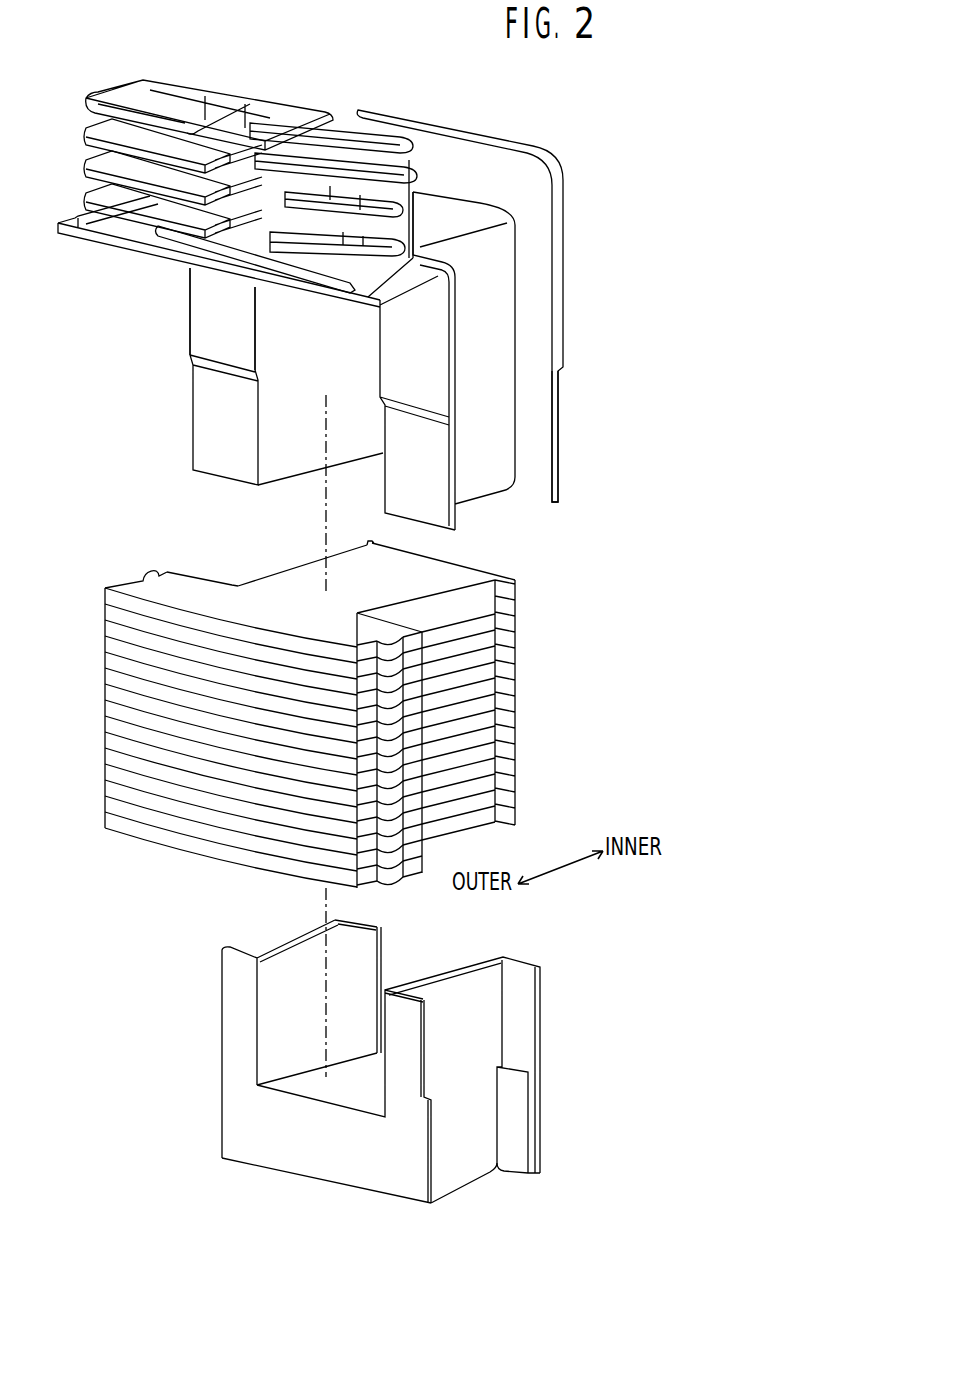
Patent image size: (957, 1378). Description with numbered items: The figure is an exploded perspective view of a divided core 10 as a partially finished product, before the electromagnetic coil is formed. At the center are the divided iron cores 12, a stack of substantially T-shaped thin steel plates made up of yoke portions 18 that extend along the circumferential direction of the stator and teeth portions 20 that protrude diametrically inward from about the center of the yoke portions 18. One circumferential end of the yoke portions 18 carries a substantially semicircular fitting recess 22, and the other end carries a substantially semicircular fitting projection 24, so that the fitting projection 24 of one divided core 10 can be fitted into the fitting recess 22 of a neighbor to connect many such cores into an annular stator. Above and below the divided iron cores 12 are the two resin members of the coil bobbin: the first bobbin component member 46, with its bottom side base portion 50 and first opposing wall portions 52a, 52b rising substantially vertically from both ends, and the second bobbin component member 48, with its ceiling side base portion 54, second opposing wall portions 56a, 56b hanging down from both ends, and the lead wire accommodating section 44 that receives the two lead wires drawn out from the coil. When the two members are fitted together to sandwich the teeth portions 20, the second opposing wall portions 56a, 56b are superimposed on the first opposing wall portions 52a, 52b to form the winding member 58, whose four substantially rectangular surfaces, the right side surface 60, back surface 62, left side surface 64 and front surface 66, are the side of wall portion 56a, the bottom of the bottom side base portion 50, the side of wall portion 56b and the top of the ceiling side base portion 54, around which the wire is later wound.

The divided core 10 is at (626, 84).
The divided iron cores 12 is at (540, 602).
The yoke portions 18 is at (186, 583).
The teeth portions 20 is at (294, 573).
The fitting recess 22 is at (142, 577).
The fitting projection 24 is at (392, 883).
The lead wire accommodating section 44 is at (197, 97).
The first bobbin component member 46 is at (565, 1011).
The second bobbin component member 48 is at (580, 188).
The bottom side base portion 50 is at (277, 1162).
The first opposing wall portion 52a is at (236, 1027).
The first opposing wall portion 52b is at (538, 1115).
The ceiling side base portion 54 is at (478, 203).
The second opposing wall portion 56a is at (192, 400).
The second opposing wall portion 56b is at (540, 462).
The winding member 58 is at (511, 306).
The right side surface 60 is at (495, 358).
The back surface 62 is at (465, 1175).
The left side surface 64 is at (210, 318).
The front surface 66 is at (452, 207).